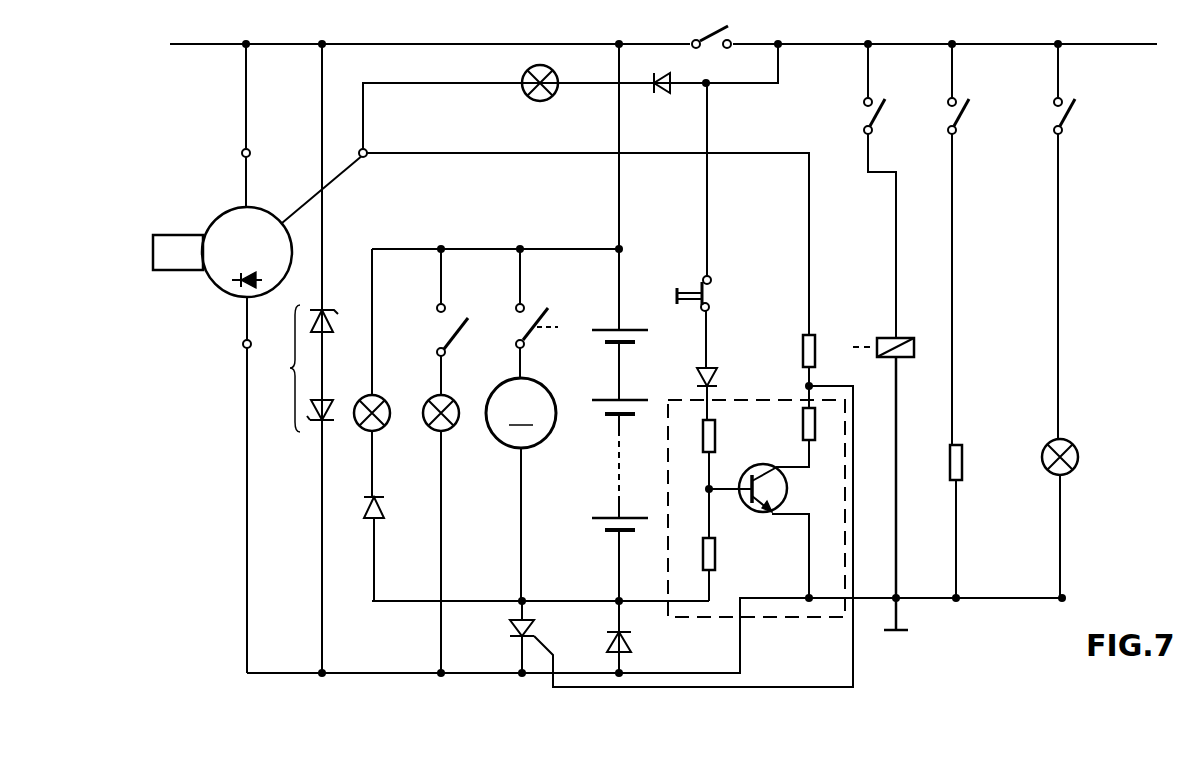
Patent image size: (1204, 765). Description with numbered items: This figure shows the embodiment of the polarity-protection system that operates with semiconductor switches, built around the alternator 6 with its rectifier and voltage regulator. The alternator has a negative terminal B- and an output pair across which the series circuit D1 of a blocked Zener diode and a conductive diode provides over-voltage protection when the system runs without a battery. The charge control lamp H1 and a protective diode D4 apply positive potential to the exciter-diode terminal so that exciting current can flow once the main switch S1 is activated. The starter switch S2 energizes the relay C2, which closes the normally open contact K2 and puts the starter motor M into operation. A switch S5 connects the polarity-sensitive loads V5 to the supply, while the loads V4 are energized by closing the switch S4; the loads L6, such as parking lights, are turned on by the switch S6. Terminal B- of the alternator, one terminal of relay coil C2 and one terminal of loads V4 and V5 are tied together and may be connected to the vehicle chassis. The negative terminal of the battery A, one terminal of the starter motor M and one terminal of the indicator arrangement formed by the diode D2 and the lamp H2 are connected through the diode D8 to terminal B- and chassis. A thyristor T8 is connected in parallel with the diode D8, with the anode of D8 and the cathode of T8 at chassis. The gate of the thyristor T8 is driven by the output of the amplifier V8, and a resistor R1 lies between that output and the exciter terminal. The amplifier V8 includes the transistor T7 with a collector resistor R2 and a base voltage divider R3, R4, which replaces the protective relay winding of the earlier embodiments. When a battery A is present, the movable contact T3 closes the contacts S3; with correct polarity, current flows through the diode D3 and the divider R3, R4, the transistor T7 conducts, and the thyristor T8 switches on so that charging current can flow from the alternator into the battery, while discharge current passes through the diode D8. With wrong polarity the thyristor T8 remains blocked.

The alternator 6 is at (258, 358).
The negative terminal B- is at (231, 352).
The series circuit D1 is at (300, 368).
The charge control lamp H1 is at (540, 99).
The protective diode D4 is at (663, 98).
The main switch S1 is at (735, 54).
The starter switch S2 is at (865, 191).
The switch S5 is at (944, 244).
The switch S4 is at (1050, 241).
The relay C2 is at (893, 469).
The loads V5 is at (972, 521).
The loads V4 is at (1074, 518).
The indicator lamp H2 is at (383, 373).
The diode D2 is at (381, 519).
The switch S6 is at (436, 322).
The loads L6 is at (444, 428).
The normally open contact K2 is at (538, 313).
The starter motor M is at (521, 489).
The battery A is at (619, 485).
The contacts S3 is at (712, 283).
The movable contact arm T3 is at (690, 290).
The diode D3 is at (712, 372).
The resistor R1 is at (815, 340).
The amplifier V8 is at (762, 399).
The base voltage divider resistor R3 is at (703, 432).
The base voltage divider resistor R4 is at (703, 552).
The collector resistor R2 is at (803, 424).
The transistor T7 is at (766, 512).
The thyristor T8 is at (509, 628).
The diode D8 is at (634, 641).